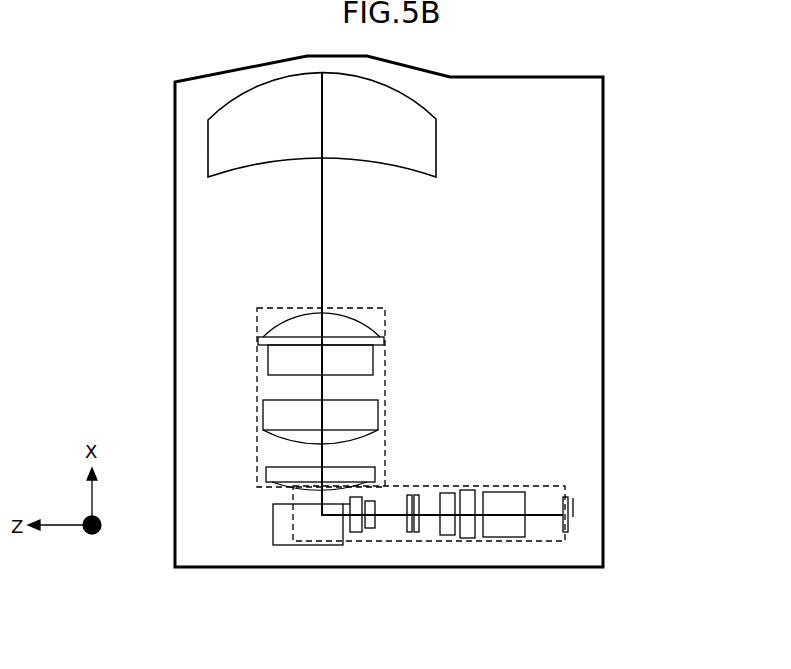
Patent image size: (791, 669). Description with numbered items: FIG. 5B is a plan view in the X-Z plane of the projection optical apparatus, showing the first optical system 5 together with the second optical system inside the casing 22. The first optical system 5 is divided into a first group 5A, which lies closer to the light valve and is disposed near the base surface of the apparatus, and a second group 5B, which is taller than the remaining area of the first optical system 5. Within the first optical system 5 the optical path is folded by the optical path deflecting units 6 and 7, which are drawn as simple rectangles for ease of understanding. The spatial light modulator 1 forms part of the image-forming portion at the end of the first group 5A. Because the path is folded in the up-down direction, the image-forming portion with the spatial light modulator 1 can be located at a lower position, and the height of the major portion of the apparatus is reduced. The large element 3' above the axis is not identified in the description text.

The casing 22 is at (604, 240).
The observation lens 3' is at (279, 125).
The first optical system 5 is at (424, 471).
The second group 5B is at (257, 372).
The first group 5A is at (462, 518).
The optical path deflecting unit 7 is at (282, 545).
The optical path deflecting unit 6 is at (360, 547).
The spatial light modulator 1 is at (575, 503).